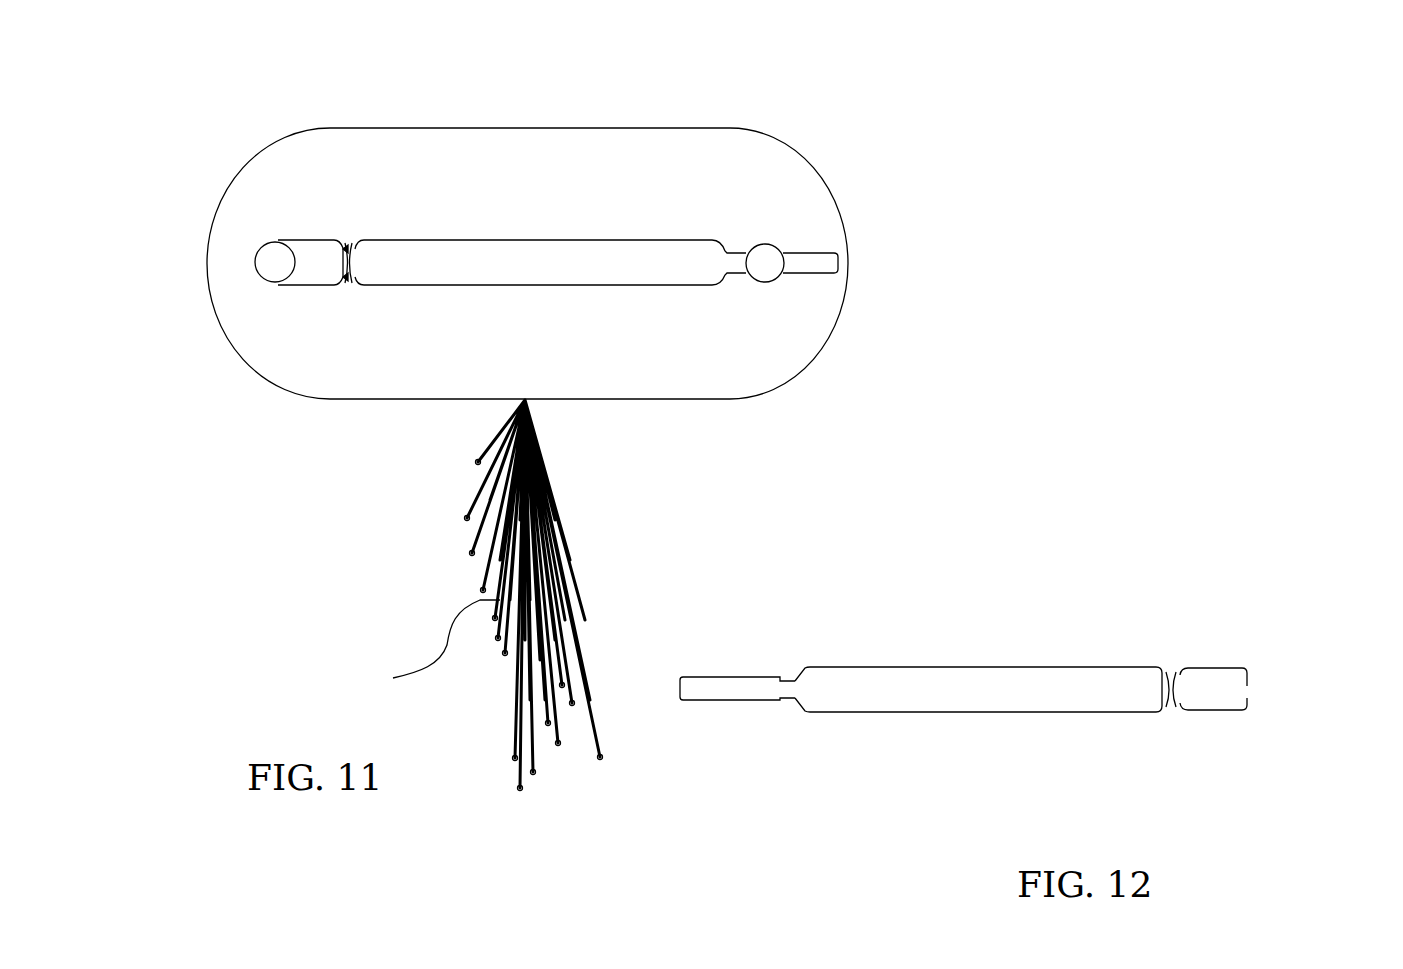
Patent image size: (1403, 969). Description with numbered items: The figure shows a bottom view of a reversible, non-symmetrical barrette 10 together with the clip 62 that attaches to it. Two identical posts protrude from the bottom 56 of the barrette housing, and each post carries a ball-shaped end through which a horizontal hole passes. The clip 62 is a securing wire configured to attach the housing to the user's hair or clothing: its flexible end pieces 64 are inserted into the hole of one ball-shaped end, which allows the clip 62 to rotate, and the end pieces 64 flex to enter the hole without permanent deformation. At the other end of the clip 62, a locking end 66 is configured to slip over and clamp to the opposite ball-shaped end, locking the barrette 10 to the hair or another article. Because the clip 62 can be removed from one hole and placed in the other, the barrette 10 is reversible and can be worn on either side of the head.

In FIG. 11, the barrette 10 is at (973, 298).
In FIG. 11, the bottom of the housing 56 is at (757, 372).
In FIG. 11, the clip 62 is at (618, 240).
In FIG. 12, the clip 62 is at (977, 712).
In FIG. 12, the end pieces 64 is at (1247, 678).
In FIG. 12, the locking end 66 is at (747, 700).